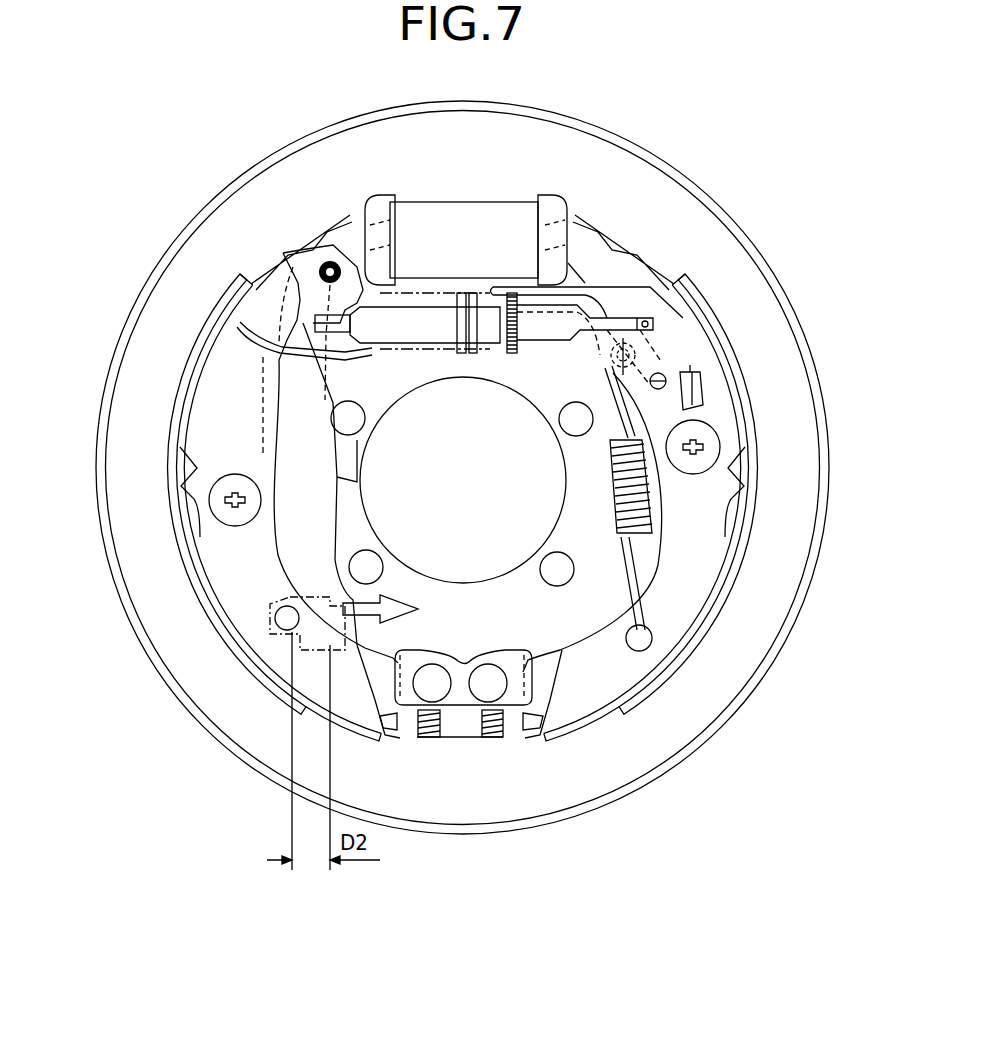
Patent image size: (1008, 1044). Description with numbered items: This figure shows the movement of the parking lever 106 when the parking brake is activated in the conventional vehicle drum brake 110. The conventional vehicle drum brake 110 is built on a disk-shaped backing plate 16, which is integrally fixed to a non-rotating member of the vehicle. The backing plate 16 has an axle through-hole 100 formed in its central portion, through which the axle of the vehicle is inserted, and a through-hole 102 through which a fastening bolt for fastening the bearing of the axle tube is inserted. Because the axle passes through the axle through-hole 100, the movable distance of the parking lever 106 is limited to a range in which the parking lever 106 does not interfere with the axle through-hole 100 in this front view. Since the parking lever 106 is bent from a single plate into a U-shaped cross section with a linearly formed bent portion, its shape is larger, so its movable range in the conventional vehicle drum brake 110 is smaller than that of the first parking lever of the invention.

The backing plate 16 is at (538, 793).
The axle through-hole 100 is at (383, 515).
The through-hole 102 is at (348, 418).
The parking lever 106 is at (288, 373).
The conventional vehicle drum brake 110 is at (674, 797).